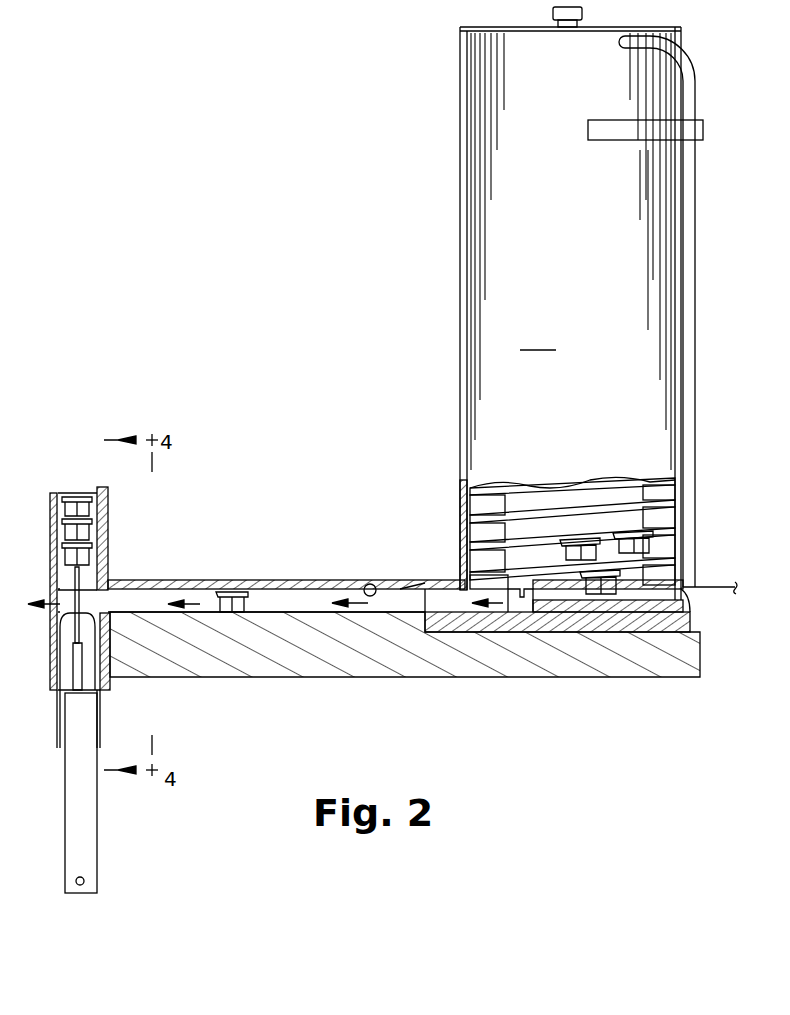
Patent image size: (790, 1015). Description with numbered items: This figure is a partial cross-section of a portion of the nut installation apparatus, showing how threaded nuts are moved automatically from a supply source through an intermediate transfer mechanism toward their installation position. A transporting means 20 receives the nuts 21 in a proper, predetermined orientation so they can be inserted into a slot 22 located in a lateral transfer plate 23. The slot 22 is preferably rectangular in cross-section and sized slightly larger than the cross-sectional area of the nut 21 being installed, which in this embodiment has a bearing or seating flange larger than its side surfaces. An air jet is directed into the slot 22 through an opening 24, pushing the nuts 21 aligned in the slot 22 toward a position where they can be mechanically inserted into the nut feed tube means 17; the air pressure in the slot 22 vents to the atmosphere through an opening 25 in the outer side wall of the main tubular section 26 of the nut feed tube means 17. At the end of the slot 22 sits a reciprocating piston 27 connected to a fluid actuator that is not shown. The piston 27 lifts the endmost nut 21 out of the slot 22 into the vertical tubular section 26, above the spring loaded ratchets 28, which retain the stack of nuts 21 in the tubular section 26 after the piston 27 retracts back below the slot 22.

The nut feed tube means 17 is at (130, 496).
The transporting means 20 is at (598, 309).
The nuts 21 is at (598, 582).
The slot 22 is at (374, 584).
The lateral transfer plate 23 is at (290, 678).
The opening 24 is at (525, 632).
The opening 25 is at (50, 608).
The main tubular section 26 is at (50, 512).
The reciprocating piston 27 is at (88, 692).
The spring loaded ratchets 28 is at (100, 600).